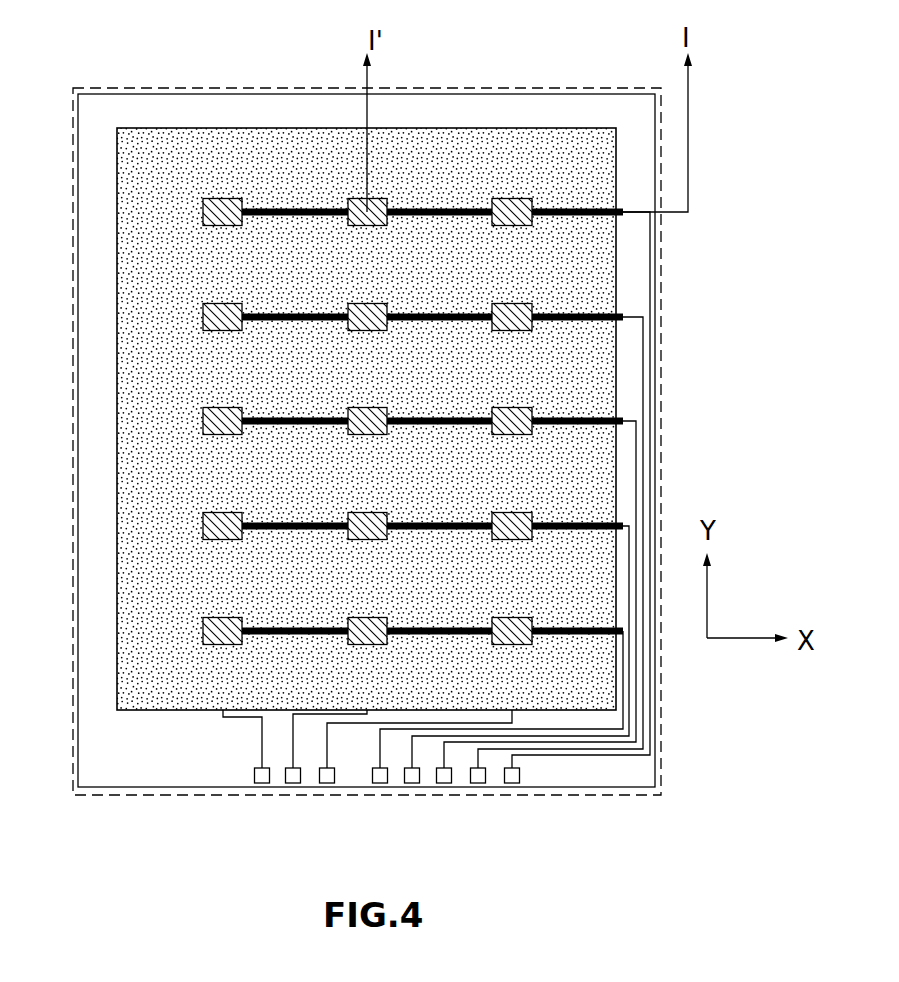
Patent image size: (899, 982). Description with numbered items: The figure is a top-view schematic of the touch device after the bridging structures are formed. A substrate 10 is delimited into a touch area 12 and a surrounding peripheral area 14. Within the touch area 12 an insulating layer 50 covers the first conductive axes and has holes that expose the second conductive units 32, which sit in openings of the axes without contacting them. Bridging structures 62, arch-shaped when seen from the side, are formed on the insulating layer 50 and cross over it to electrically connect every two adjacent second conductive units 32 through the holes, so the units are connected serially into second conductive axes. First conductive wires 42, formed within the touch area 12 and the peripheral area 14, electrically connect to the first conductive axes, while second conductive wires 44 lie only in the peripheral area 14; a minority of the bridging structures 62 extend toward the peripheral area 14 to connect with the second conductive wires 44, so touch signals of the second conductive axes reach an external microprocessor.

The substrate 10 is at (642, 350).
The touch area 12 is at (299, 128).
The peripheral area 14 is at (447, 88).
The second conductive units 32 is at (203, 205).
The first conductive wires 42 is at (258, 752).
The second conductive wires 44 is at (651, 270).
The insulating layer 50 is at (603, 447).
The bridging structures 62 is at (265, 207).